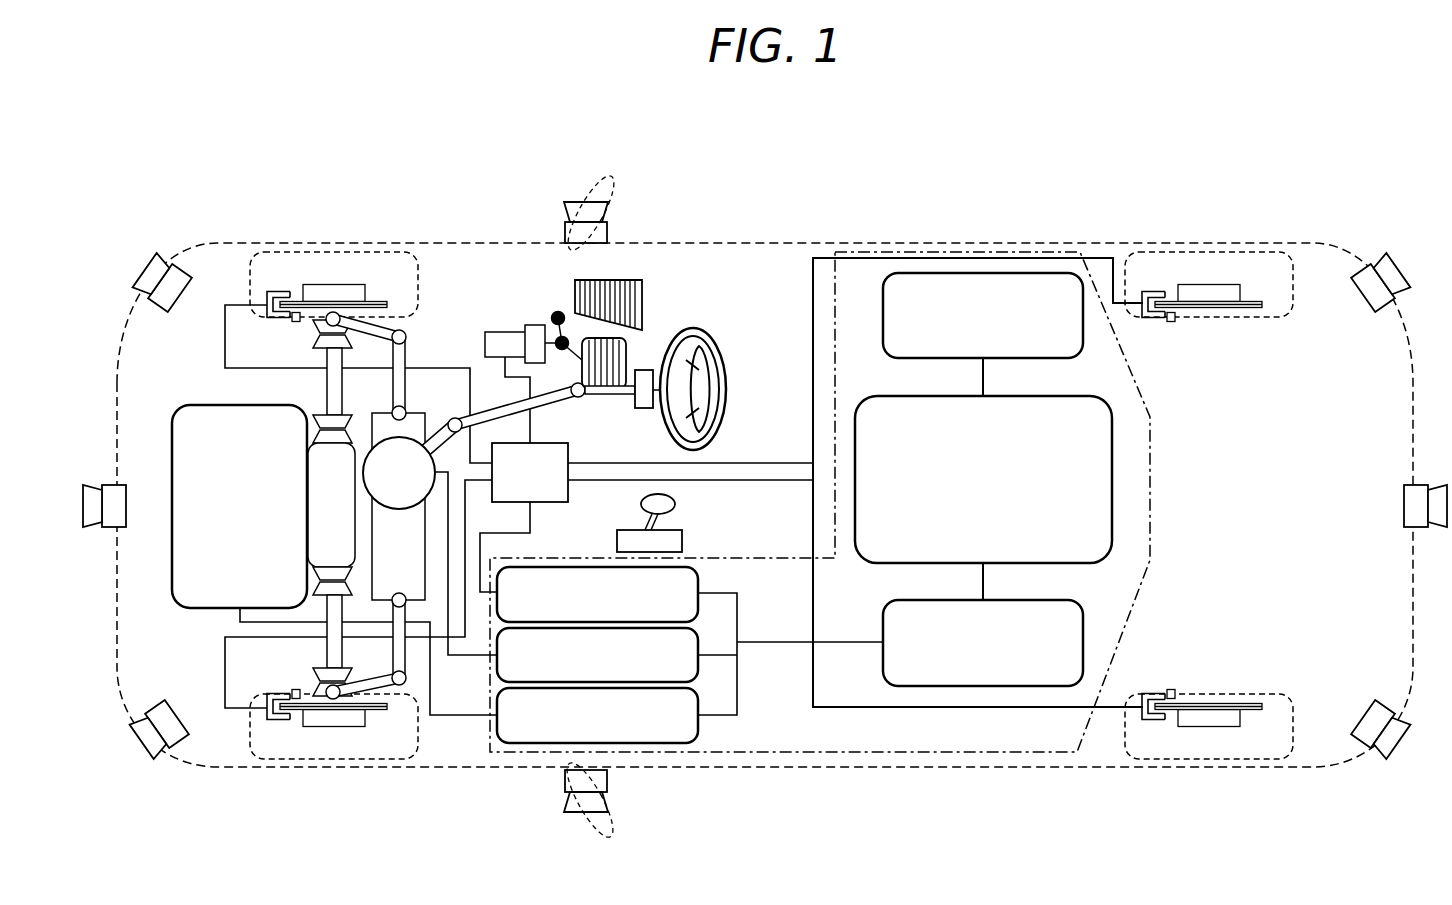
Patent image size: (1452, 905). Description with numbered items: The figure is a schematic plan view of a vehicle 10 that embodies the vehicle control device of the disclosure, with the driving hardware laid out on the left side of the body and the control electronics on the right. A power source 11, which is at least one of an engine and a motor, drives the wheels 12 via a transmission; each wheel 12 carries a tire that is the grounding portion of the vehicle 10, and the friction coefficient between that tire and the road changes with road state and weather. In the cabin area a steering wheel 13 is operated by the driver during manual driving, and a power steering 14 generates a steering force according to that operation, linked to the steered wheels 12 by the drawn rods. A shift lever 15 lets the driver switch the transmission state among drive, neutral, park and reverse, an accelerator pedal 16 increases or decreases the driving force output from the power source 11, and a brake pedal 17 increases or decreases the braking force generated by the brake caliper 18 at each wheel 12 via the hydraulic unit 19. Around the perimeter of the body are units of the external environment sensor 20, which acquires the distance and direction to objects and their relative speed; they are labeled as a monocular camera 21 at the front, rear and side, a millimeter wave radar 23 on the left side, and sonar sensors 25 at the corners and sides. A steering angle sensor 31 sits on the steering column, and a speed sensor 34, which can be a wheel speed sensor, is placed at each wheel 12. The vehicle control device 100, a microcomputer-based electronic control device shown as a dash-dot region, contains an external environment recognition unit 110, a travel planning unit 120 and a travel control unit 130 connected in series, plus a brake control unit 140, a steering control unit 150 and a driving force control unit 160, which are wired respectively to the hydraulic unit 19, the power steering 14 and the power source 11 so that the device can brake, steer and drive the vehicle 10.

The vehicle 10 is at (352, 153).
The power source 11 is at (197, 610).
The wheels 12 is at (418, 272).
The steering wheel 13 is at (722, 348).
The power steering 14 is at (420, 440).
The shift lever 15 is at (676, 503).
The accelerator pedal 16 is at (642, 290).
The brake pedal 17 is at (628, 352).
The brake caliper 18 is at (272, 292).
The hydraulic unit 19 is at (548, 443).
The external environment sensor 20 is at (767, 509).
The monocular camera 21 is at (1003, 506).
The millimeter wave radar 23 is at (104, 506).
The sonar sensor 25 is at (770, 506).
The steering angle sensor 31 is at (645, 408).
The speed sensor 34 is at (297, 322).
The vehicle control device 100 is at (1153, 453).
The external environment recognition unit 110 is at (921, 273).
The travel planning unit 120 is at (1113, 523).
The travel control unit 130 is at (1083, 628).
The brake control unit 140 is at (698, 583).
The steering control unit 150 is at (698, 660).
The driving force control unit 160 is at (698, 723).